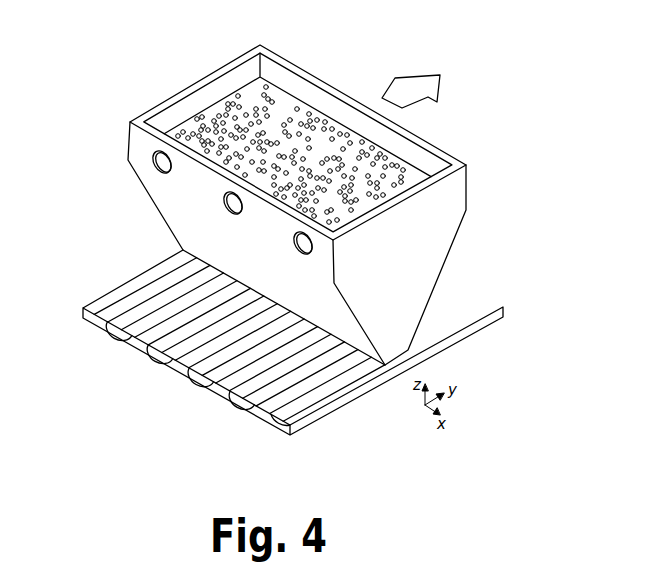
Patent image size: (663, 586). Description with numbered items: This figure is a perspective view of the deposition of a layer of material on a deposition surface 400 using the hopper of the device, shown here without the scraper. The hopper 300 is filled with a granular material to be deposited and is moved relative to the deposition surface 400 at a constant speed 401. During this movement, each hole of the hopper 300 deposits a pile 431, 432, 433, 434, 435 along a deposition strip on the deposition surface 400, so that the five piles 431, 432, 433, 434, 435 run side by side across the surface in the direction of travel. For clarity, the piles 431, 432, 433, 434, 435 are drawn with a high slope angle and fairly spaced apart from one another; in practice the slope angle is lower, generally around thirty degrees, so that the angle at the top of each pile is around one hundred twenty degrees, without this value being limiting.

The hopper 300 is at (192, 85).
The constant speed 401 is at (415, 77).
The deposition surface 400 is at (455, 300).
The pile 431 is at (290, 433).
The pile 432 is at (243, 398).
The pile 433 is at (200, 377).
The pile 434 is at (160, 352).
The pile 435 is at (117, 330).